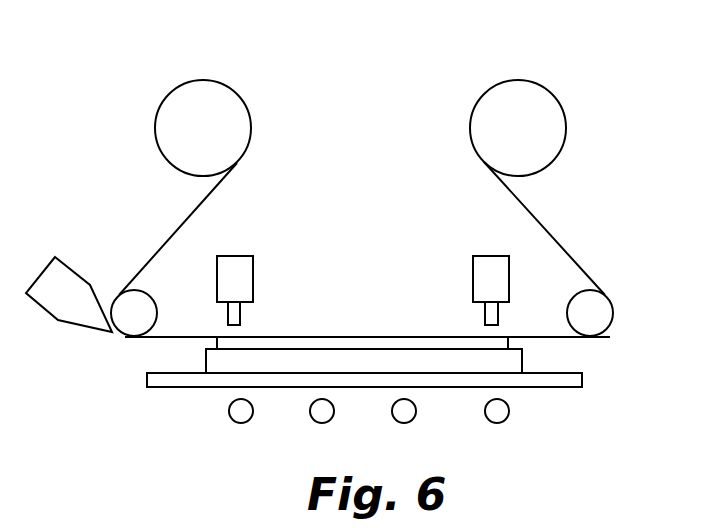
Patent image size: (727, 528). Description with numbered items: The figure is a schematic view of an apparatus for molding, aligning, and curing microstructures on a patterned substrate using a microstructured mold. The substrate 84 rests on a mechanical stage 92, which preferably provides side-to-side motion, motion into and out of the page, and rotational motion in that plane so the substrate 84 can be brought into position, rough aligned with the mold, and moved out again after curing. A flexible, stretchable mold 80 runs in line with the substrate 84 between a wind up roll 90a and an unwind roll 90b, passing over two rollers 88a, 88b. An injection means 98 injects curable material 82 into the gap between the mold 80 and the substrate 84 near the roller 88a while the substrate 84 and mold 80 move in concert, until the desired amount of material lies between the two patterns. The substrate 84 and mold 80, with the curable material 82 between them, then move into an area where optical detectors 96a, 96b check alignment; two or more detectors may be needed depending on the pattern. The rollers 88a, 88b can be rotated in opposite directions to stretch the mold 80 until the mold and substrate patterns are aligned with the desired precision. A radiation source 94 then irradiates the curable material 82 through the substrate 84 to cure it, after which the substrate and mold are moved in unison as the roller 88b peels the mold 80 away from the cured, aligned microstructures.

The flexible, stretchable mold 80 is at (160, 340).
The curable material 82 is at (497, 346).
The substrate 84 is at (507, 363).
The roller 88a is at (134, 302).
The roller 88b is at (614, 315).
The wind up roll 90a is at (203, 92).
The unwind roll 90b is at (470, 118).
The mechanical stage 92 is at (190, 389).
The radiation source 94 is at (334, 412).
The optical detector 96a is at (253, 272).
The optical detector 96b is at (473, 272).
The injection means 98 is at (67, 262).